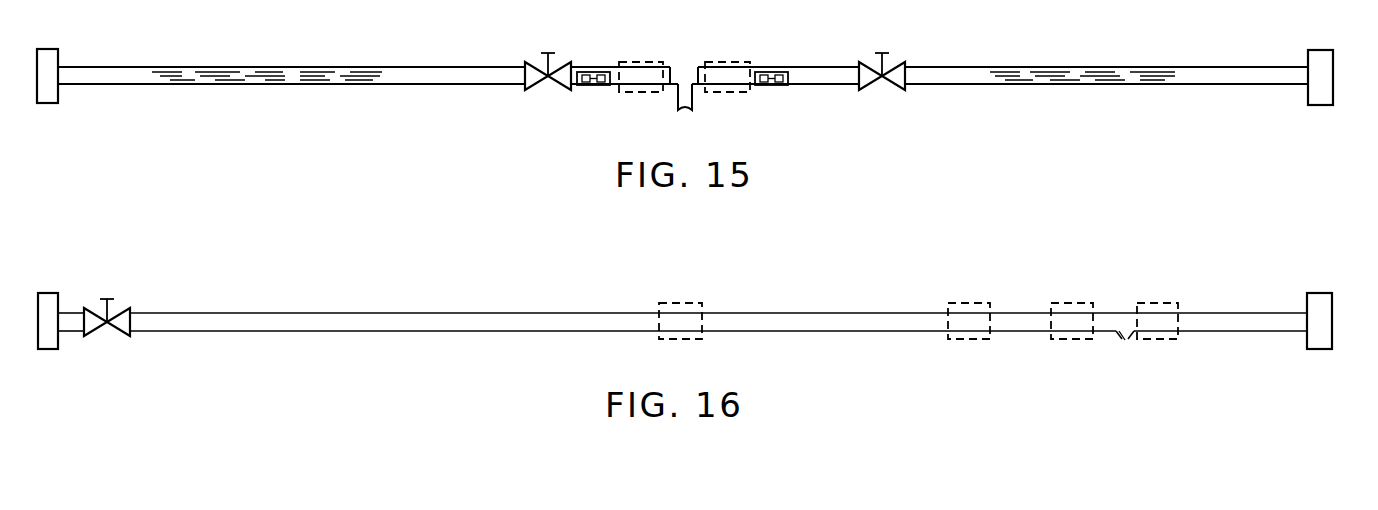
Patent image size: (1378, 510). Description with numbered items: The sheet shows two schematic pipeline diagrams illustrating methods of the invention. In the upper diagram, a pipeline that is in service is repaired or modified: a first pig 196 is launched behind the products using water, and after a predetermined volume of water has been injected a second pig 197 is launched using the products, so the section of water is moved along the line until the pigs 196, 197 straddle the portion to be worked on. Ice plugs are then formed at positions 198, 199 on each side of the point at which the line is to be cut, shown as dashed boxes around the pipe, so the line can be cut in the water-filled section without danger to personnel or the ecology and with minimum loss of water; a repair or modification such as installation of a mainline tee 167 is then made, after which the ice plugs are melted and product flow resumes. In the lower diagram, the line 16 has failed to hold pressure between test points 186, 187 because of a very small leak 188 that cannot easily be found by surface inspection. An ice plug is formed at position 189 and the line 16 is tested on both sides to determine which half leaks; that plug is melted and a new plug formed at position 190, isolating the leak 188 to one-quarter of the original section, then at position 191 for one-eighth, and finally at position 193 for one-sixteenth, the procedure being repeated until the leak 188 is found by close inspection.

In FIG. 16, the line 16 is at (432, 333).
In FIG. 15, the mainline tee 167 is at (700, 40).
In FIG. 16, the test point 186 is at (53, 293).
In FIG. 16, the test point 187 is at (1316, 293).
In FIG. 16, the leak 188 is at (1124, 342).
In FIG. 16, the ice plug position 189 is at (681, 303).
In FIG. 16, the ice plug position 190 is at (960, 303).
In FIG. 16, the ice plug position 191 is at (1163, 303).
In FIG. 16, the ice plug position 193 is at (1062, 303).
In FIG. 15, the first pig 196 is at (770, 67).
In FIG. 15, the second pig 197 is at (565, 92).
In FIG. 15, the ice plug position 198 is at (735, 96).
In FIG. 15, the ice plug position 199 is at (630, 62).